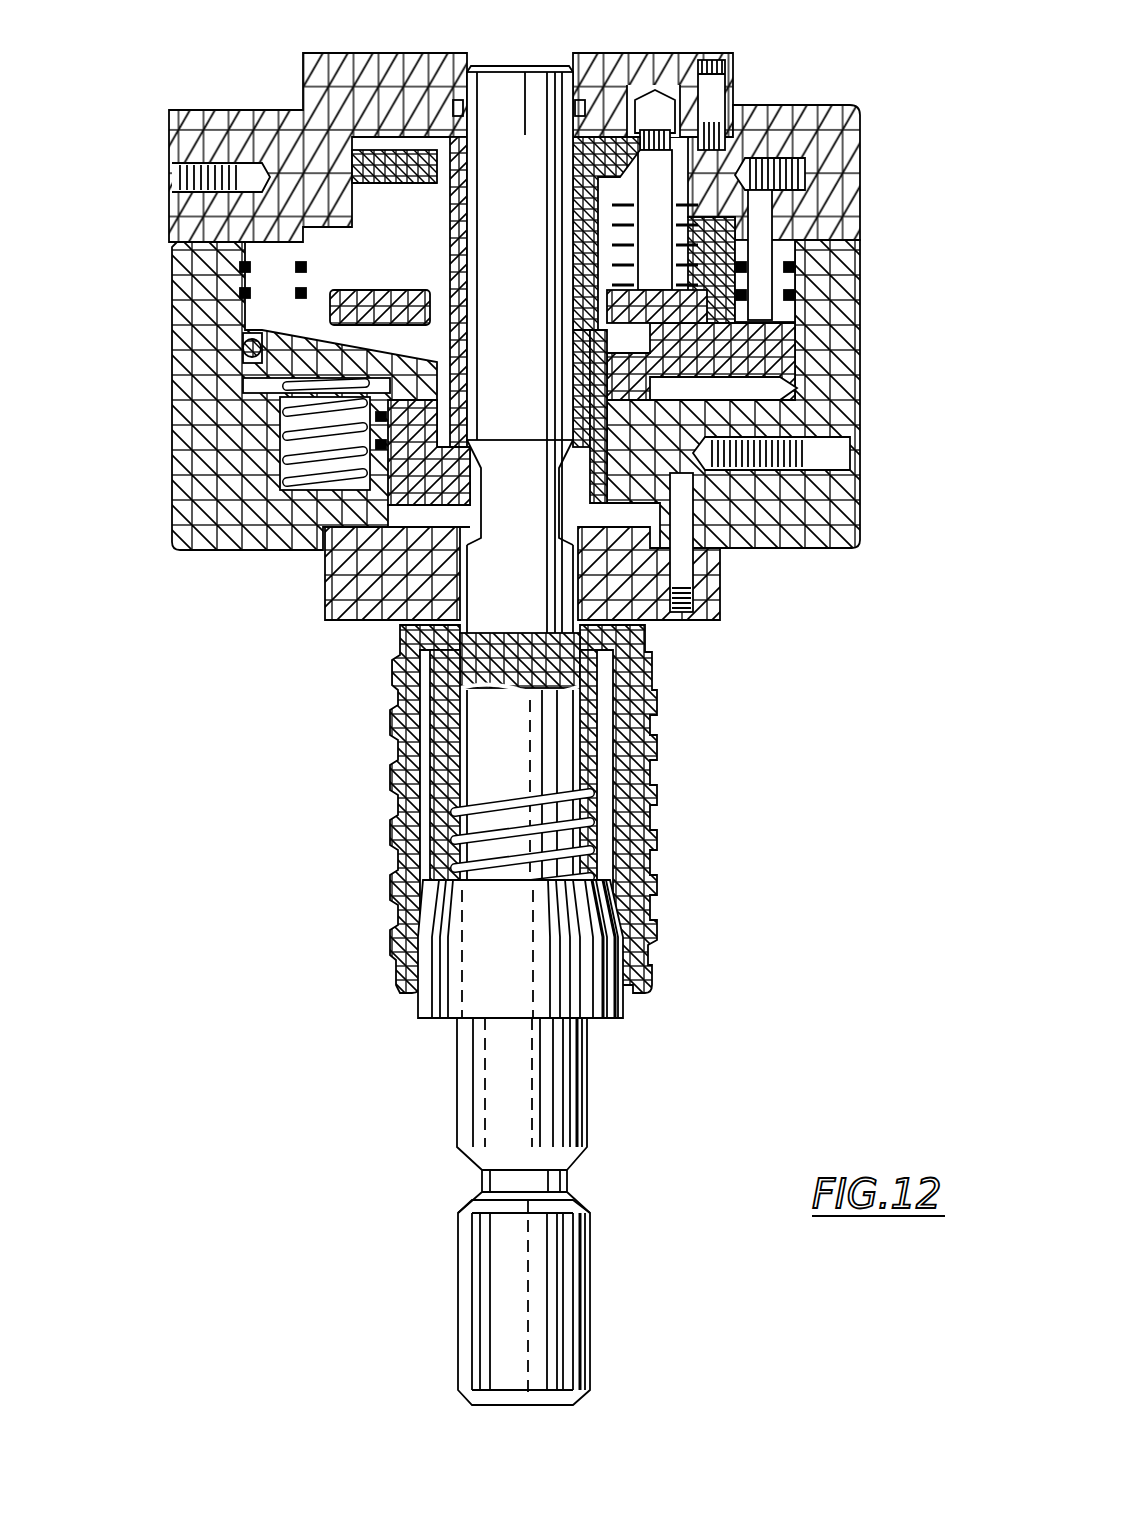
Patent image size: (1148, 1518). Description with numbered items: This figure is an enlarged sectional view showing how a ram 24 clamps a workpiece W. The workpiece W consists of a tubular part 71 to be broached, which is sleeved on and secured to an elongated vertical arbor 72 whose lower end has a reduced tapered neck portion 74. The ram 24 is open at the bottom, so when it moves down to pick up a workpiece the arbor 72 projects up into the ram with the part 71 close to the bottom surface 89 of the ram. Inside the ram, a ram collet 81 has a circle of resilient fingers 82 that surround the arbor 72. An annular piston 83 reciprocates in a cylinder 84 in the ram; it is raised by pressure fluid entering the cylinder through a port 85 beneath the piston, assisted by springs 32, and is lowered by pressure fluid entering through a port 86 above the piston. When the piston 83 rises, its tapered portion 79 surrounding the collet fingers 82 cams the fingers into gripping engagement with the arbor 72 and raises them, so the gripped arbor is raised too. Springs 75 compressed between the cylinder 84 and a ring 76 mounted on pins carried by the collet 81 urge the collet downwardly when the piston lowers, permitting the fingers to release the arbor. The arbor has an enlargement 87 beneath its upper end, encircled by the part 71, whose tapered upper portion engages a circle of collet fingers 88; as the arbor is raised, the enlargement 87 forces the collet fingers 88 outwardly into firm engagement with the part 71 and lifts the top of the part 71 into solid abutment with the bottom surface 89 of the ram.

The ram 24 is at (395, 1032).
The springs 32 is at (283, 385).
The tubular part 71 is at (632, 195).
The arbor 72 is at (585, 1105).
The reduced tapered neck portion 74 is at (570, 1183).
The springs 75 is at (650, 263).
The ring 76 is at (370, 296).
The tapered portion 79 is at (450, 487).
The ram collet 81 is at (380, 158).
The resilient fingers 82 is at (583, 377).
The annular piston 83 is at (760, 387).
The cylinder 84 is at (413, 505).
The port 85 is at (737, 425).
The port 86 is at (763, 227).
The enlargement 87 is at (615, 1014).
The collet fingers 88 is at (427, 886).
The bottom surface 89 is at (355, 620).
The workpiece W is at (672, 798).